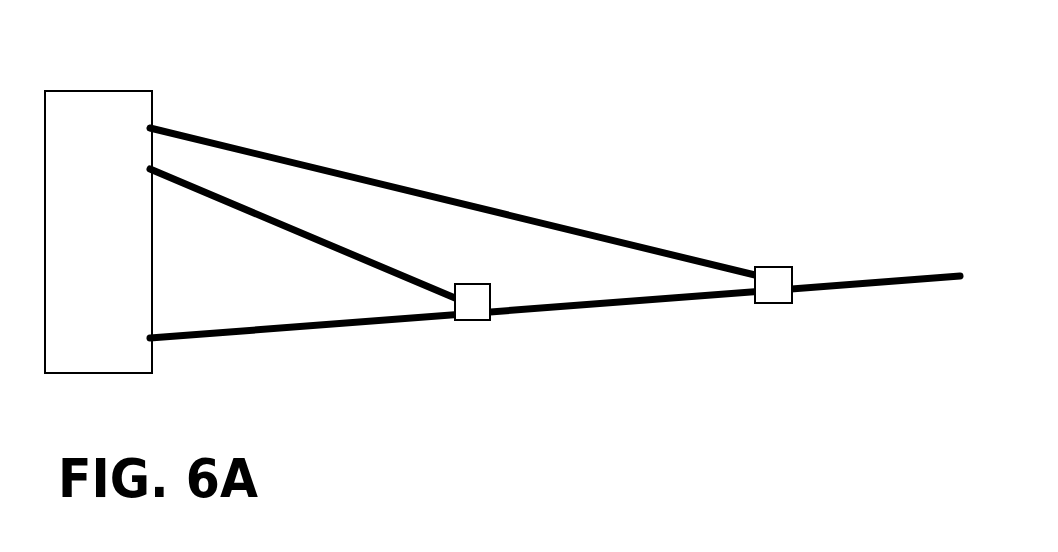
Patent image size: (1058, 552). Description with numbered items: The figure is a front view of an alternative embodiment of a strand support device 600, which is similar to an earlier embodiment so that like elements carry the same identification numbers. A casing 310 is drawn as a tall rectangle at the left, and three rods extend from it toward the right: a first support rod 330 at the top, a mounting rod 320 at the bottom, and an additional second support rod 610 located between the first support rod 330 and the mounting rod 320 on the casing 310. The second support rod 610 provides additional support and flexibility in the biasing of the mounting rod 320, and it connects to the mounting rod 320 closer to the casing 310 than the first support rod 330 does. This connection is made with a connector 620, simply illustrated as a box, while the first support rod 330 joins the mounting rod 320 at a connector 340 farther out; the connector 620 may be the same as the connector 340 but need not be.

The strand support device 600 is at (770, 72).
The casing 310 is at (96, 91).
The first support rod 330 is at (296, 160).
The second support rod 610 is at (280, 228).
The mounting rod 320 is at (618, 306).
The connector 620 is at (480, 320).
The connector 340 is at (770, 267).